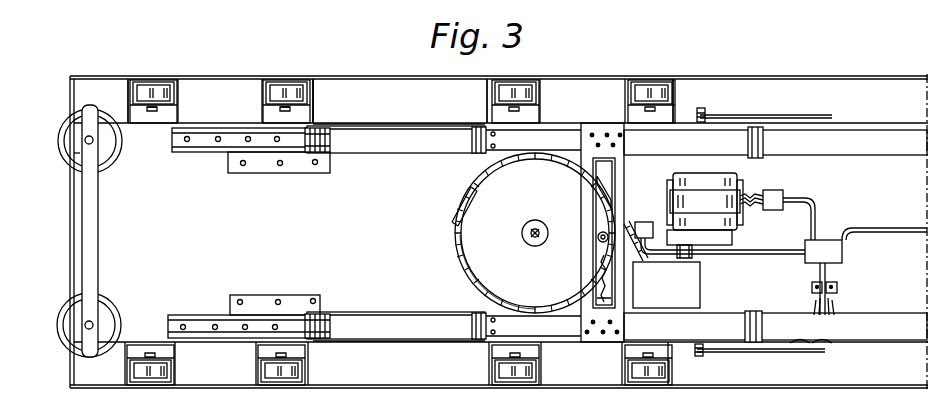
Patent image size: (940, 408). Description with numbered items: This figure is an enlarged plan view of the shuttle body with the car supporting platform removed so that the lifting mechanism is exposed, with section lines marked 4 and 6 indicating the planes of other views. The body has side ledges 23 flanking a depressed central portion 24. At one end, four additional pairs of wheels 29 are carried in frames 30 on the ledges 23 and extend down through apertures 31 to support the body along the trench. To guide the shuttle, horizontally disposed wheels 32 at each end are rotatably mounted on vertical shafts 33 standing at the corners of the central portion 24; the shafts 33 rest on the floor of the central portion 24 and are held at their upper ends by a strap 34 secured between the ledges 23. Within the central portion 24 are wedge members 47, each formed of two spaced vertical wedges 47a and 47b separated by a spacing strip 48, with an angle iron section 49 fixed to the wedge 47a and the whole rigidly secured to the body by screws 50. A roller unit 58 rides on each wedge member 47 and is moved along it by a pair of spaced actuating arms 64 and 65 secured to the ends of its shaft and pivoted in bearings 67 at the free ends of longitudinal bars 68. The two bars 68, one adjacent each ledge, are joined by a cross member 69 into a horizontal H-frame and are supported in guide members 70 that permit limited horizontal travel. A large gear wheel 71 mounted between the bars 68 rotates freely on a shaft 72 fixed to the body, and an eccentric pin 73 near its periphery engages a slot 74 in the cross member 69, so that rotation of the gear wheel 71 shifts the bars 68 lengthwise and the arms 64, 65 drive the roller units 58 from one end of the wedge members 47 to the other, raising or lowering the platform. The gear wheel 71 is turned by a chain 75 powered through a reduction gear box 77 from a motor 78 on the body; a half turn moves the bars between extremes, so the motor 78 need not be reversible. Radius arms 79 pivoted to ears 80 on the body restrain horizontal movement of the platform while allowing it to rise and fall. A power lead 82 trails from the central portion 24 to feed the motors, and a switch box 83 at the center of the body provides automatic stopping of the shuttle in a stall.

The section line 4- 4 is at (20, 306).
The section line 6- 6 is at (553, 405).
The ledges 23 is at (346, 101).
The central portion 24 is at (321, 235).
The wheels 29 is at (263, 96).
The frames 30 is at (263, 112).
The apertures 31 is at (130, 94).
The horizontally disposed wheels 32 is at (114, 158).
The vertical shaft 33 is at (88, 140).
The strap 34 is at (92, 228).
The wedge members 47 is at (173, 153).
The vertical wedge 47a is at (302, 152).
The vertical wedge 47b is at (172, 130).
The spacing strip 48 is at (203, 152).
The angle iron section 49 is at (277, 153).
The screws 50 is at (243, 166).
The roller unit 58 is at (330, 140).
The actuating arm 64 is at (437, 153).
The actuating arm 65 is at (420, 126).
The bearings 67 is at (472, 138).
The longitudinal bars 68 is at (673, 153).
The cross member 69 is at (624, 184).
The guide members 70 is at (748, 144).
The gear wheel 71 is at (541, 303).
The shaft 72 is at (535, 220).
The eccentric pin 73 is at (598, 233).
The slot 74 is at (600, 209).
The chain 75 is at (470, 282).
The reduction gear box 77 is at (681, 301).
The motor 78 is at (716, 213).
The radius arms 79 is at (772, 114).
The ears 80 is at (706, 103).
The power lead 82 is at (845, 296).
The switch box 83 is at (645, 222).